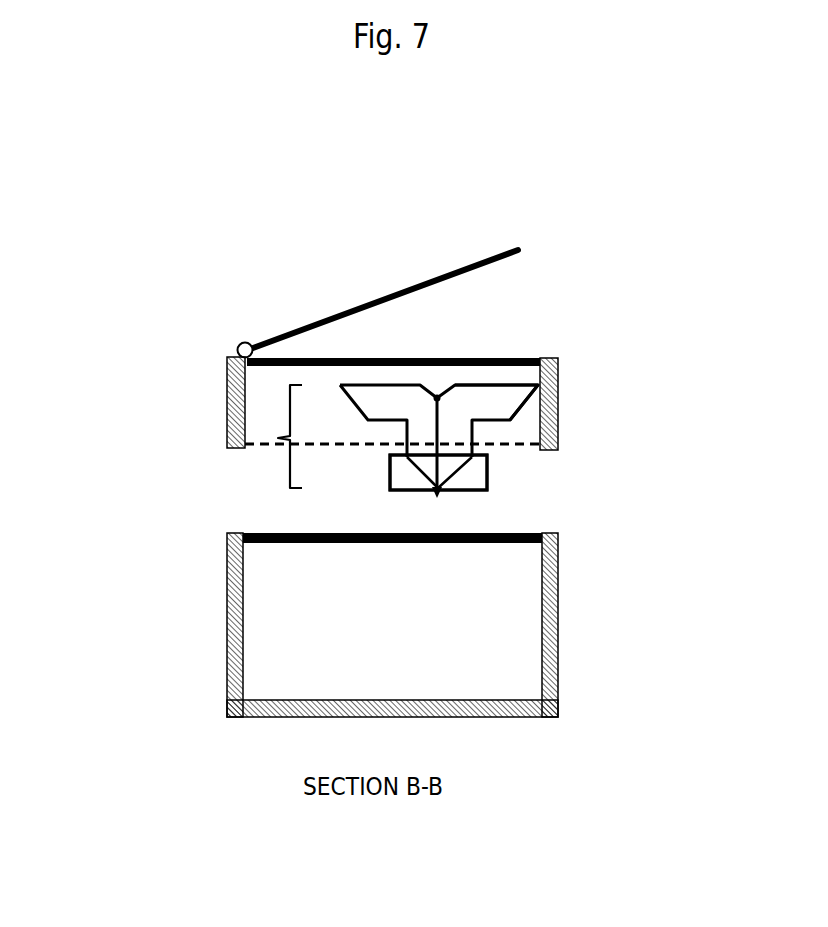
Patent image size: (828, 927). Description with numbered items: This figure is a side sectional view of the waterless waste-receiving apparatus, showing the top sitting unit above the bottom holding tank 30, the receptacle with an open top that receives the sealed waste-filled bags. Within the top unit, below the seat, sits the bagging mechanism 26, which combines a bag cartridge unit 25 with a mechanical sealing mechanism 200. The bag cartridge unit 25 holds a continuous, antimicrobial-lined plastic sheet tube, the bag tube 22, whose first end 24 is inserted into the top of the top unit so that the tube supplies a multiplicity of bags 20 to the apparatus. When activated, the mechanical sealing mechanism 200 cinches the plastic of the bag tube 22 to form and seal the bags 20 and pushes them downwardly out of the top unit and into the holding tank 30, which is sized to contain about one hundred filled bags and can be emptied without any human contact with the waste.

The bags 20 is at (437, 396).
The bag tube 22 is at (467, 402).
The first end of bag tube 24 is at (440, 467).
The bag cartridge unit 25 is at (522, 387).
The bagging mechanism 26 is at (278, 438).
The housing base 30 is at (303, 610).
The mechanical sealing mechanism 200 is at (487, 488).